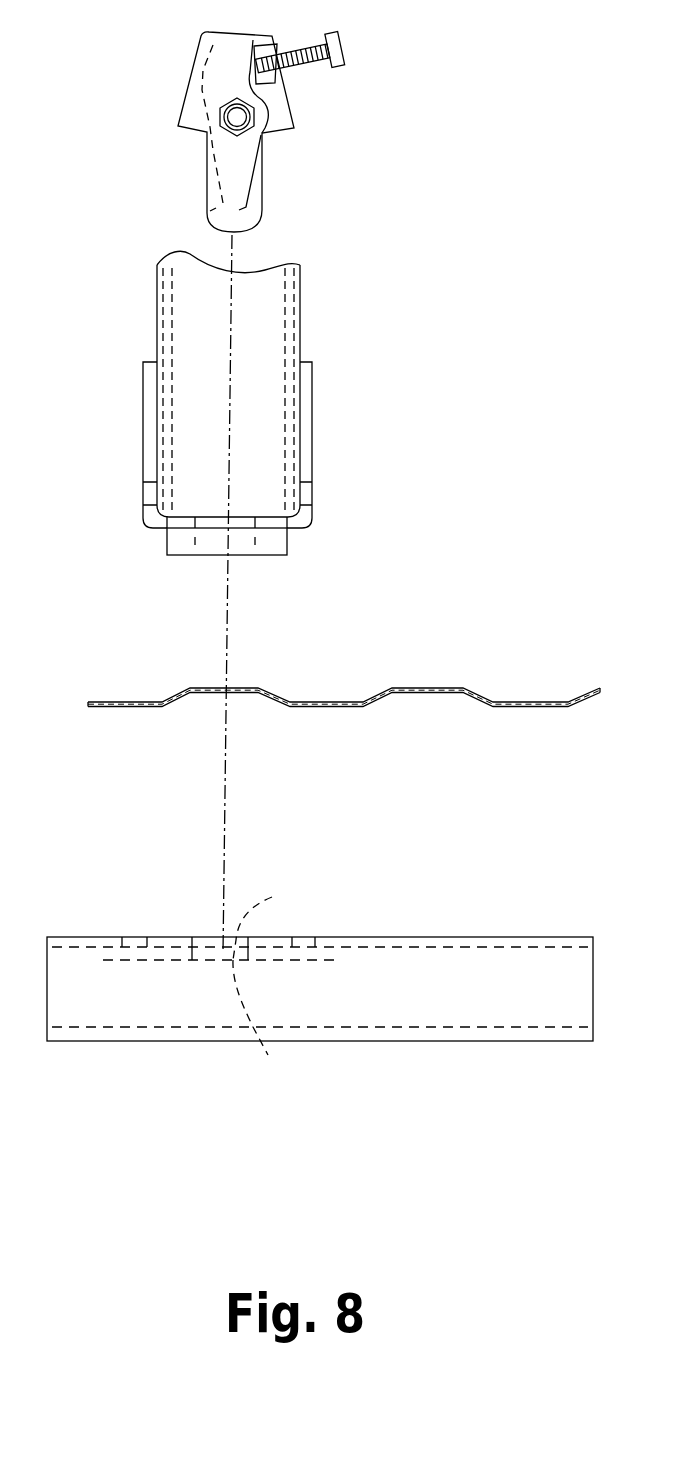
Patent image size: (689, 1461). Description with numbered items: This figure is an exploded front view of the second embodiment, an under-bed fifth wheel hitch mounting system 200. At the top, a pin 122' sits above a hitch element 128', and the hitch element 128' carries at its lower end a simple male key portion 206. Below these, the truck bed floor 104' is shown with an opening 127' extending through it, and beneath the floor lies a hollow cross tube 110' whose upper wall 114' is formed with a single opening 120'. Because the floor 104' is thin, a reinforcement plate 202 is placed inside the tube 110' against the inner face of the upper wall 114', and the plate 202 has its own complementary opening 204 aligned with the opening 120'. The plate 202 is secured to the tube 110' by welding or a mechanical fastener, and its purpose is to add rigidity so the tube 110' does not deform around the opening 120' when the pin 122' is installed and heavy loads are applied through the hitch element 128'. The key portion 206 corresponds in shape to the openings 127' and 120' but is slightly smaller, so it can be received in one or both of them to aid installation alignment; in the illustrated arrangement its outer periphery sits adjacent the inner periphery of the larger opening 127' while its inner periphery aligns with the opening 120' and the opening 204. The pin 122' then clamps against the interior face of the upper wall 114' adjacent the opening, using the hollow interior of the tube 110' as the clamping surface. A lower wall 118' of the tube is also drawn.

The pin 122' is at (307, 131).
The under-bed fifth wheel hitch mounting system 200 is at (478, 211).
The hitch element 128' is at (167, 389).
The male key portion 206 is at (280, 545).
The opening 127' is at (280, 594).
The floor 104' is at (344, 651).
The tube 110' is at (320, 938).
The upper wall 114' is at (320, 911).
The reinforcement plate 202 is at (334, 963).
The lower layer 118' is at (320, 1067).
The opening 120' is at (277, 915).
The complementary opening 204 is at (268, 1055).